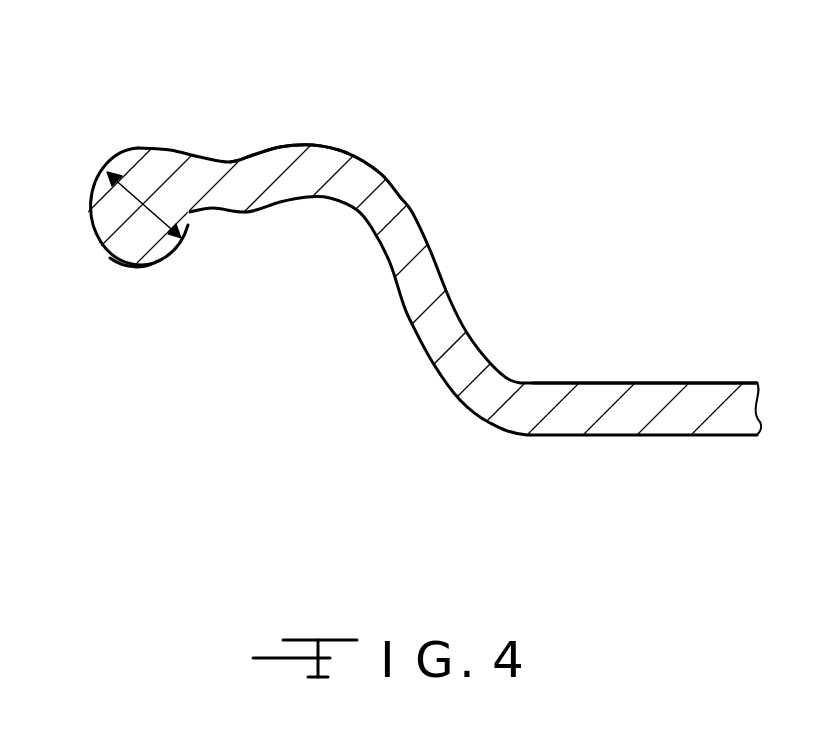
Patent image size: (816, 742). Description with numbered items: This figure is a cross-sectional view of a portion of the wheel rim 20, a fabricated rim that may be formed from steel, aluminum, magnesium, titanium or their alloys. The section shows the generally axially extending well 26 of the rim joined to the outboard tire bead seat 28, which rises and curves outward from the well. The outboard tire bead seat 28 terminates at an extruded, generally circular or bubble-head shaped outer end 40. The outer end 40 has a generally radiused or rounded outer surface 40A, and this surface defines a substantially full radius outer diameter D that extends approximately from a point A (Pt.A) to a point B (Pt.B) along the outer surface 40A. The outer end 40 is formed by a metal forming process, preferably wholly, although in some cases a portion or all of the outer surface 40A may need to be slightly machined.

The wheel rim 20 is at (620, 447).
The well 26 is at (670, 382).
The outboard tire bead seat 28 is at (260, 153).
The outer end 40 is at (86, 252).
The outer surface 40A is at (133, 265).
The outer diameter D is at (150, 213).
The point A Pt.A is at (148, 150).
The point B Pt.B is at (197, 224).